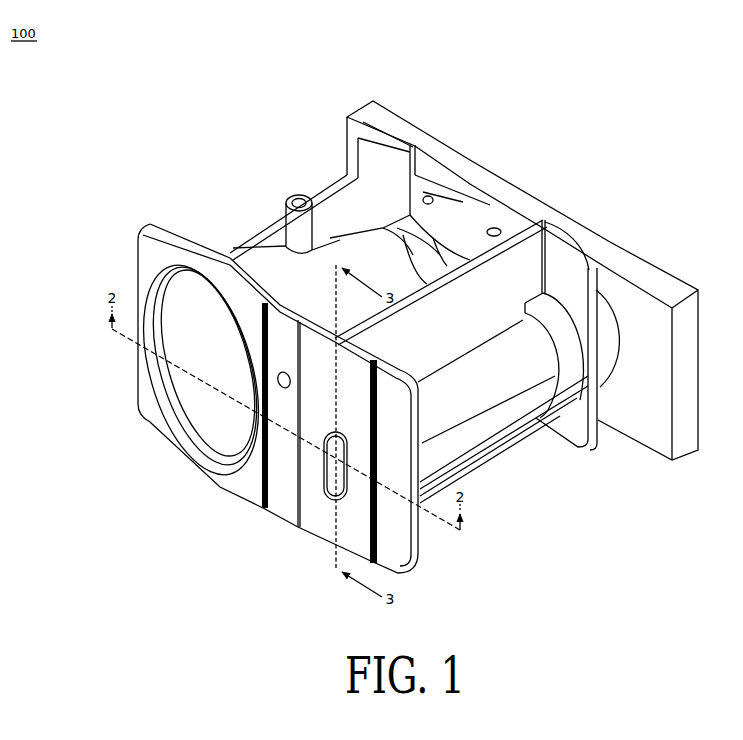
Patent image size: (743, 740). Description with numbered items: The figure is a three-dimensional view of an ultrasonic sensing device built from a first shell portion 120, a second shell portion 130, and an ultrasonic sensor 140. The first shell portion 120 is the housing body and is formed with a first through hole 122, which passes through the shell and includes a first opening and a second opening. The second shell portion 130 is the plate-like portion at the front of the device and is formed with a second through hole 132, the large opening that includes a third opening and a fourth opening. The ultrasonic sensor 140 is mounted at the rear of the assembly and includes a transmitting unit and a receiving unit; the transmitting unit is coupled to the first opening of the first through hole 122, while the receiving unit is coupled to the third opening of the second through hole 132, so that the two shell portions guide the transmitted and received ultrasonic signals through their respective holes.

The first shell portion 120 is at (562, 230).
The first through hole 122 is at (325, 471).
The second shell portion 130 is at (247, 247).
The second through hole 132 is at (208, 423).
The ultrasonic sensor 140 is at (618, 244).